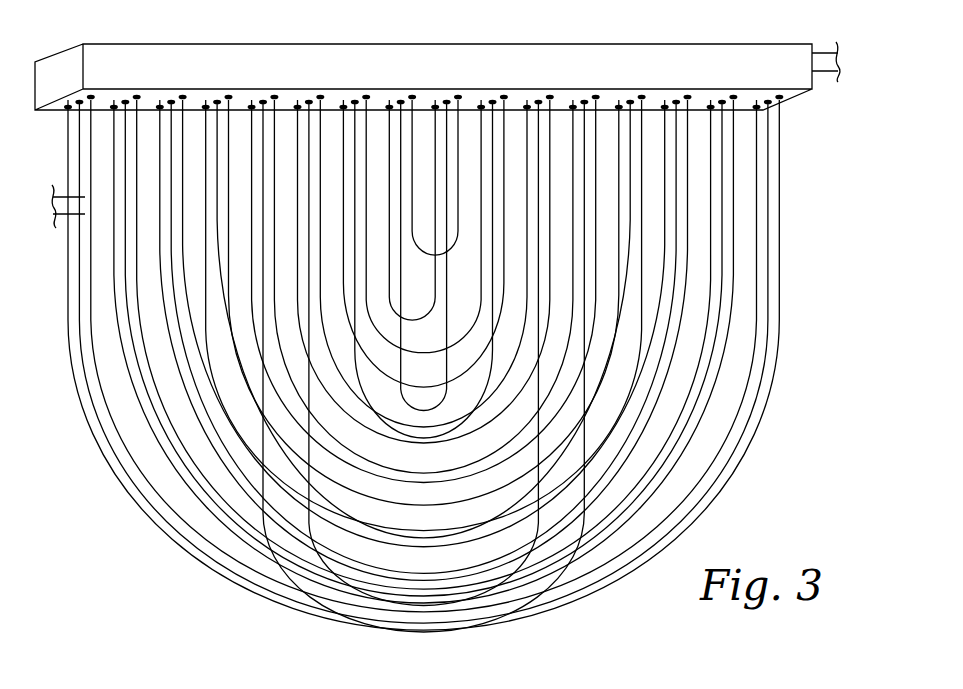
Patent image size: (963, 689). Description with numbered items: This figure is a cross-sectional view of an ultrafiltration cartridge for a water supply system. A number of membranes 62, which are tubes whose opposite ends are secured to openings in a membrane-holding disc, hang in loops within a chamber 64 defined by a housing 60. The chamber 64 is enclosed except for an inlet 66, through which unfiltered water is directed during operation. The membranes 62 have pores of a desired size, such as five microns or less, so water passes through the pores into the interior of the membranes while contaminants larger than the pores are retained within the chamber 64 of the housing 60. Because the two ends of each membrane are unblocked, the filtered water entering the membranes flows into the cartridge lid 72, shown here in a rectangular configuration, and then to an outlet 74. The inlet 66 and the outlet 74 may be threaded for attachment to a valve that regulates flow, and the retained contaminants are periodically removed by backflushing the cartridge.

The housing 60 is at (450, 365).
The membranes 62 is at (760, 184).
The chamber 64 is at (766, 400).
The inlet 66 is at (51, 205).
The cartridge lid 72 is at (178, 70).
The outlet 74 is at (840, 60).